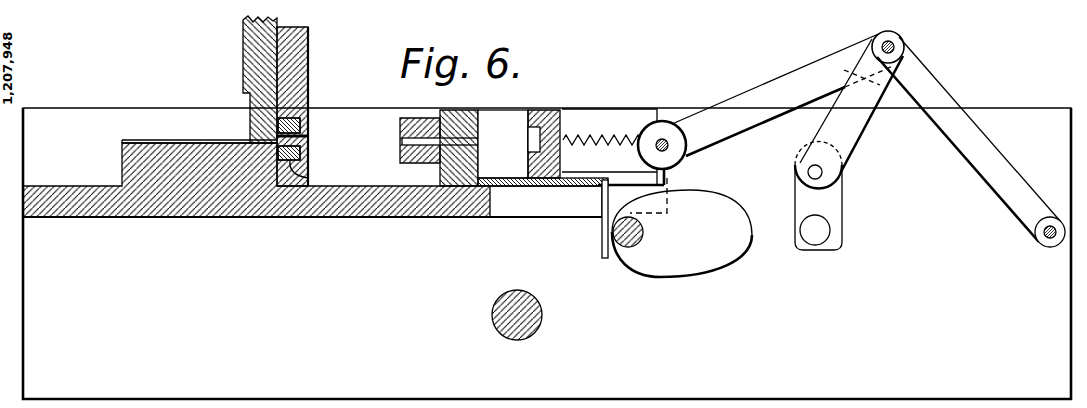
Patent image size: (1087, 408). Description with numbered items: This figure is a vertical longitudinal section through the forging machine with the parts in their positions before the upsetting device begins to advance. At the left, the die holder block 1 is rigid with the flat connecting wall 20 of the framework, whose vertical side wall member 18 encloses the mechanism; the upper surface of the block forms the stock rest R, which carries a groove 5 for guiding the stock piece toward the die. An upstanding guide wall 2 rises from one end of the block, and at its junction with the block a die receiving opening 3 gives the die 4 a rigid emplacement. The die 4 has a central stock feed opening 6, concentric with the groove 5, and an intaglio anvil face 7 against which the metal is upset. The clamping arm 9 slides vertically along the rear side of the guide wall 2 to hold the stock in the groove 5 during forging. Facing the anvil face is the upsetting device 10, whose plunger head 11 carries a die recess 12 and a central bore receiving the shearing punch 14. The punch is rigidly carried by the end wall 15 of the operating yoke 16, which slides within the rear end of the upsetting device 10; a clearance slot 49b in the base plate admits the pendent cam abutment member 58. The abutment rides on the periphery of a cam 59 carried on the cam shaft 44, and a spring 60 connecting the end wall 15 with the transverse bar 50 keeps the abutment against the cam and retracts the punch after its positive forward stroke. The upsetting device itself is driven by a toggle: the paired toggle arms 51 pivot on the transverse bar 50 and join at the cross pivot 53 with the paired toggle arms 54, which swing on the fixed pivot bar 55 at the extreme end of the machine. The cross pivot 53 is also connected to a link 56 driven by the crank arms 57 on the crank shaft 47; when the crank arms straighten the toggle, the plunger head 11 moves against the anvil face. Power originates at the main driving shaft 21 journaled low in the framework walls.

The die holder block 1 is at (210, 218).
The upstanding guide wall 2 is at (298, 89).
The die receiving opening 3 is at (298, 120).
The die 4 is at (306, 178).
The groove 5 is at (122, 145).
The stock feed opening 6 is at (309, 137).
The intaglio anvil face 7 is at (300, 152).
The clamping arm 9 is at (258, 57).
The upsetting device 10 is at (463, 112).
The plunger head 11 is at (423, 118).
The die recess 12 is at (404, 140).
The shearing punch 14 is at (498, 146).
The end wall 15 is at (542, 116).
The operating yoke 16 is at (596, 112).
The vertical side wall member 18 is at (547, 253).
The flat connecting wall 20 is at (370, 218).
The main driving shaft 21 is at (510, 302).
The shearing punch operating cam shaft 44 is at (628, 247).
The crank shaft 47 is at (820, 237).
The clearance slot 49b is at (632, 186).
The transverse bar 50 is at (668, 143).
The toggle arms 51 is at (782, 94).
The cross pivot 53 is at (898, 47).
The toggle arms 54 is at (969, 139).
The fixed pivot bar 55 is at (1040, 243).
The link 56 is at (851, 111).
The crank arms 57 is at (832, 202).
The cam abutment member 58 is at (602, 241).
The cam 59 is at (682, 233).
The spring 60 is at (605, 151).
The stock rest R is at (160, 135).